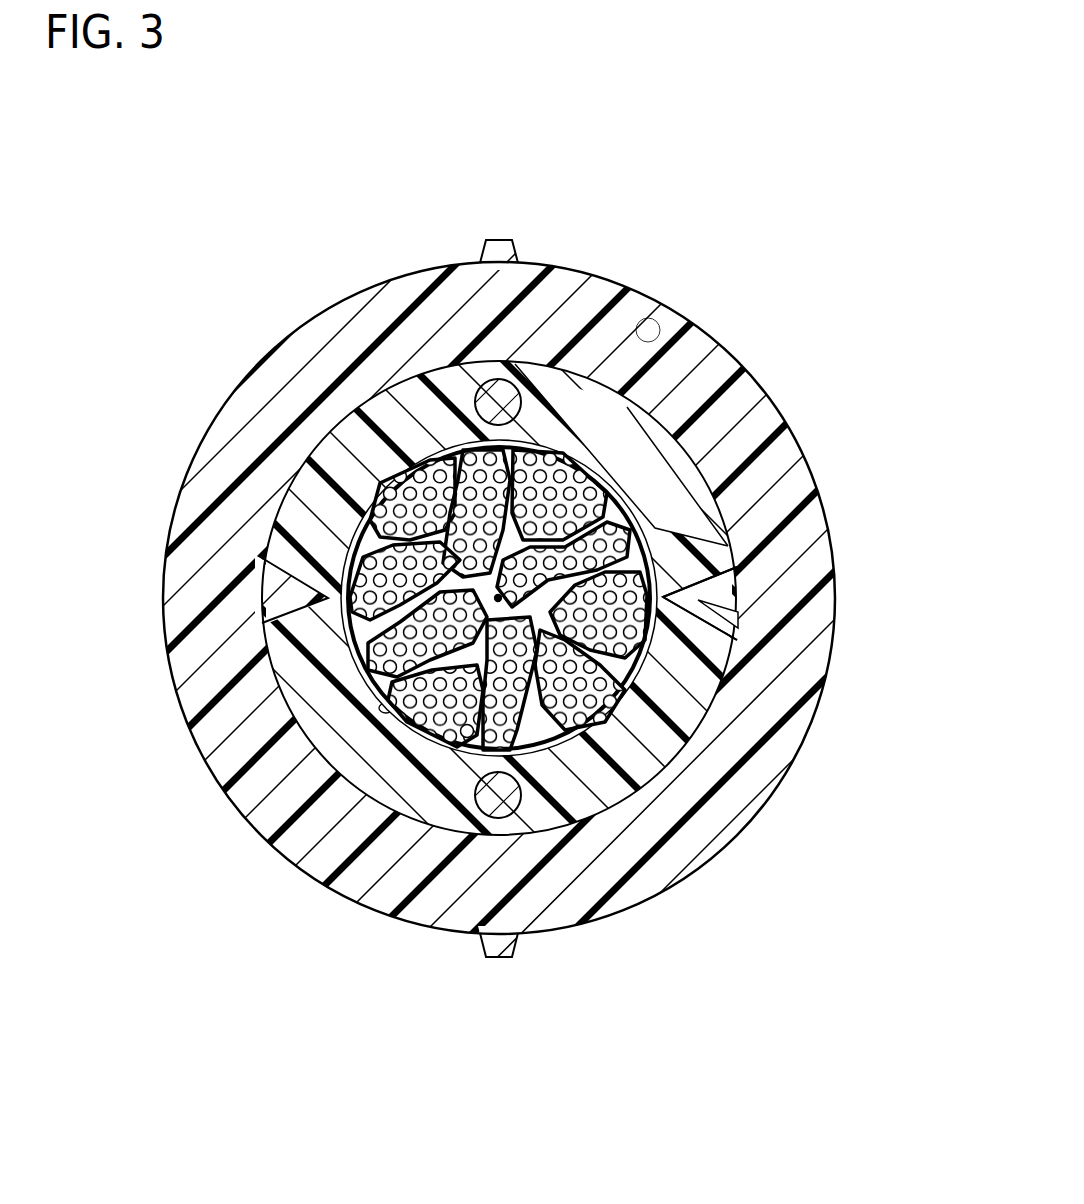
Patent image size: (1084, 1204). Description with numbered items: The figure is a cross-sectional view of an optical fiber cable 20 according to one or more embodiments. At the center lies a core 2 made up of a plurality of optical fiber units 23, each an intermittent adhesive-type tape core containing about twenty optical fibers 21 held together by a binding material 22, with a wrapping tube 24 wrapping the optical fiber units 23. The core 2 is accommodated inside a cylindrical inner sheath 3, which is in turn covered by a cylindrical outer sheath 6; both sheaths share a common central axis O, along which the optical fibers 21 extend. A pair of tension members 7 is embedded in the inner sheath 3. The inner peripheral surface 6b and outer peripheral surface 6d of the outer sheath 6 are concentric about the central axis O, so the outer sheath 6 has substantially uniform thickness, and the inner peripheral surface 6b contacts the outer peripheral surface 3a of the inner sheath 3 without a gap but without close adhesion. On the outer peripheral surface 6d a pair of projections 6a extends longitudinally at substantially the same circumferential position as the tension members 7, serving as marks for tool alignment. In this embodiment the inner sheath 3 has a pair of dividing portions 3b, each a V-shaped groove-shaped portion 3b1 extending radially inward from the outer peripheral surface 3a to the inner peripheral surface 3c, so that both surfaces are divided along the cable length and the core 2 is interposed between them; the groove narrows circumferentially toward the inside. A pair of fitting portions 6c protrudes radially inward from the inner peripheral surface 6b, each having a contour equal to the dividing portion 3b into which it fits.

The optical fiber cable 20 is at (185, 192).
The core 2 is at (588, 722).
The inner sheath 3 is at (702, 690).
The outer peripheral surface of the inner sheath 3a is at (690, 416).
The dividing portion 3b is at (702, 600).
The groove-shaped portion 3b1 is at (700, 618).
The inner peripheral surface of the inner sheath 3c is at (382, 712).
The outer sheath 6 is at (367, 324).
The projection 6a is at (497, 244).
The inner peripheral surface of the outer sheath 6b is at (628, 417).
The fitting portion 6c is at (722, 623).
The outer peripheral surface of the outer sheath 6d is at (648, 332).
The tension member 7 is at (502, 398).
The optical fiber 21 is at (452, 738).
The binding material 22 is at (472, 740).
The optical fiber unit 23 is at (488, 760).
The wrapping tube 24 is at (557, 752).
The central axis O is at (498, 598).